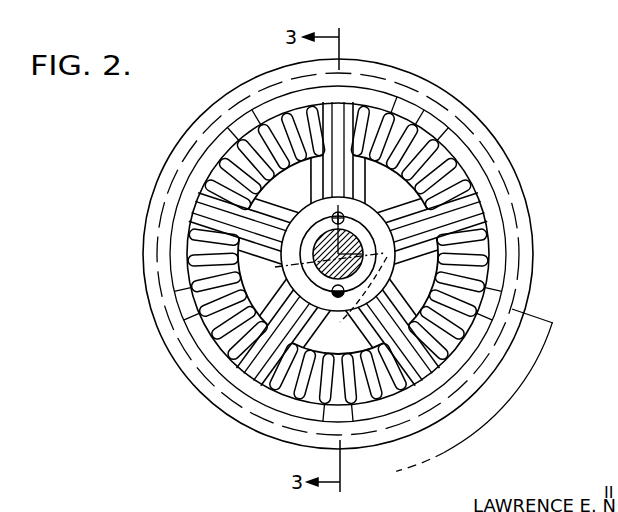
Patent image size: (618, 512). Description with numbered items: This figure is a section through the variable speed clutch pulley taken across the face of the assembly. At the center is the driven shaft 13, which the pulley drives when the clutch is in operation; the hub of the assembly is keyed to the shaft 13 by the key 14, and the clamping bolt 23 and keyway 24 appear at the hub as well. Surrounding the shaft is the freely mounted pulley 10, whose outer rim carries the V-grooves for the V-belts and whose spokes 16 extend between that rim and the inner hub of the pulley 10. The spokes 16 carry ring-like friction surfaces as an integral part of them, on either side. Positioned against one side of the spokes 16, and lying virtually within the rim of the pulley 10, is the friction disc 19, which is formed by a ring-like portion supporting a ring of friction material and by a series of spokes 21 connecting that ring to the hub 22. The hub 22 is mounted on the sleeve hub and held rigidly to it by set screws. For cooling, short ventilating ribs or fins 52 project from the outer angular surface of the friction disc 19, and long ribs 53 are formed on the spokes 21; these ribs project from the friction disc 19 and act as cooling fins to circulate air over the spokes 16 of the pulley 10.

The pulley 10 is at (306, 436).
The driven shaft 13 is at (284, 262).
The key 14 is at (353, 278).
The spokes 16 is at (433, 122).
The friction disc 19 is at (318, 306).
The spokes 21 is at (489, 225).
The hub 22 is at (389, 258).
The clamping bolt 23 is at (309, 236).
The key 24 is at (360, 318).
The cooling and air ventilating ribs or fins 52 is at (366, 103).
The long ribs 53 is at (489, 198).